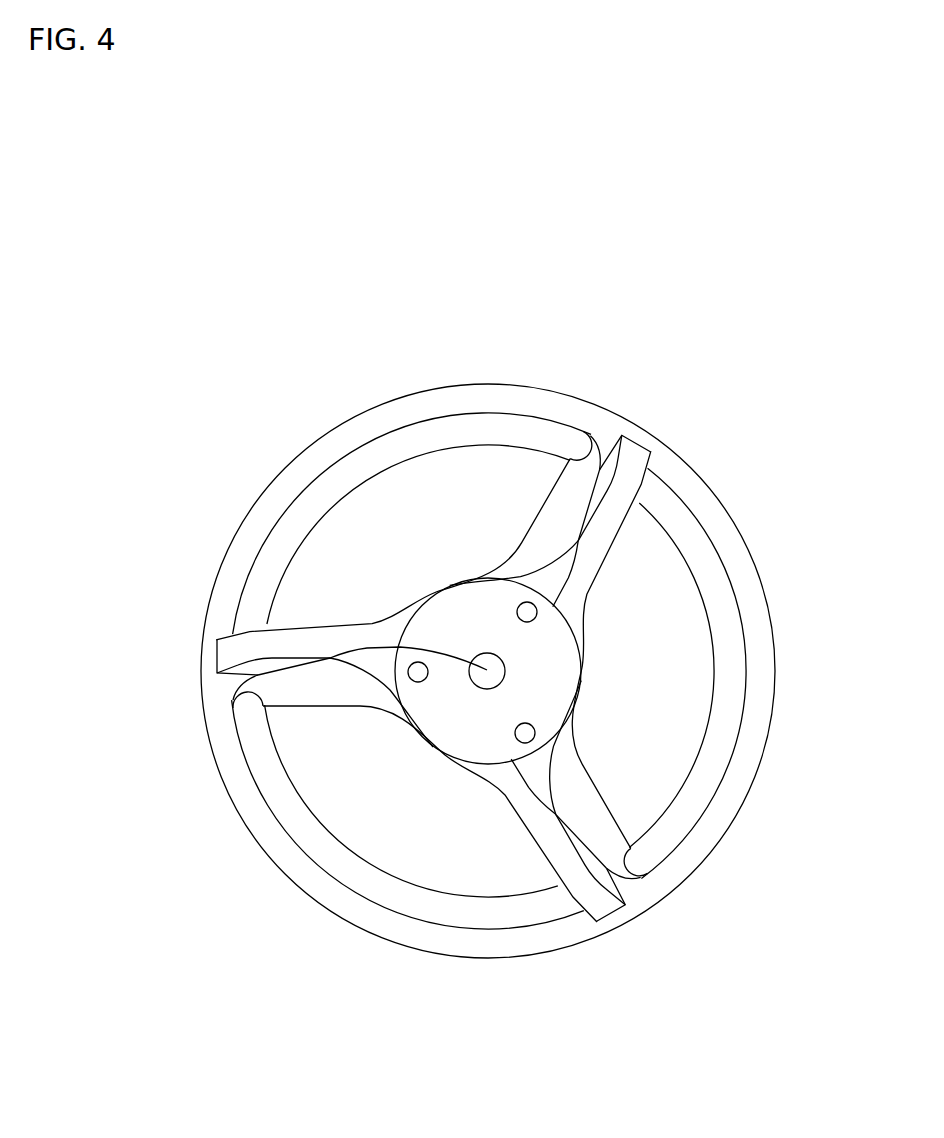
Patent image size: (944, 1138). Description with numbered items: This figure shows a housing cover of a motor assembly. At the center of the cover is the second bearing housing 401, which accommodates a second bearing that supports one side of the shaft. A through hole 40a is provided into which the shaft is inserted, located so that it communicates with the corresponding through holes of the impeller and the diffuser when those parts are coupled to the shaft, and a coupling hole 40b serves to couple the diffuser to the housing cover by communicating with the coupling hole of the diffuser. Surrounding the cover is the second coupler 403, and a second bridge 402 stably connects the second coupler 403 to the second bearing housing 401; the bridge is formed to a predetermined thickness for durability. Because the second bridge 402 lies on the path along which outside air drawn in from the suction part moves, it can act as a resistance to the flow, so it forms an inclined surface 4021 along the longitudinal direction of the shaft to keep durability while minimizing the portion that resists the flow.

The through hole 40a is at (245, 687).
The coupling hole 40b is at (523, 608).
The second bearing housing 401 is at (430, 722).
The second bridge 402 is at (613, 522).
The inclined surface 4021 is at (577, 492).
The second coupler 403 is at (768, 667).